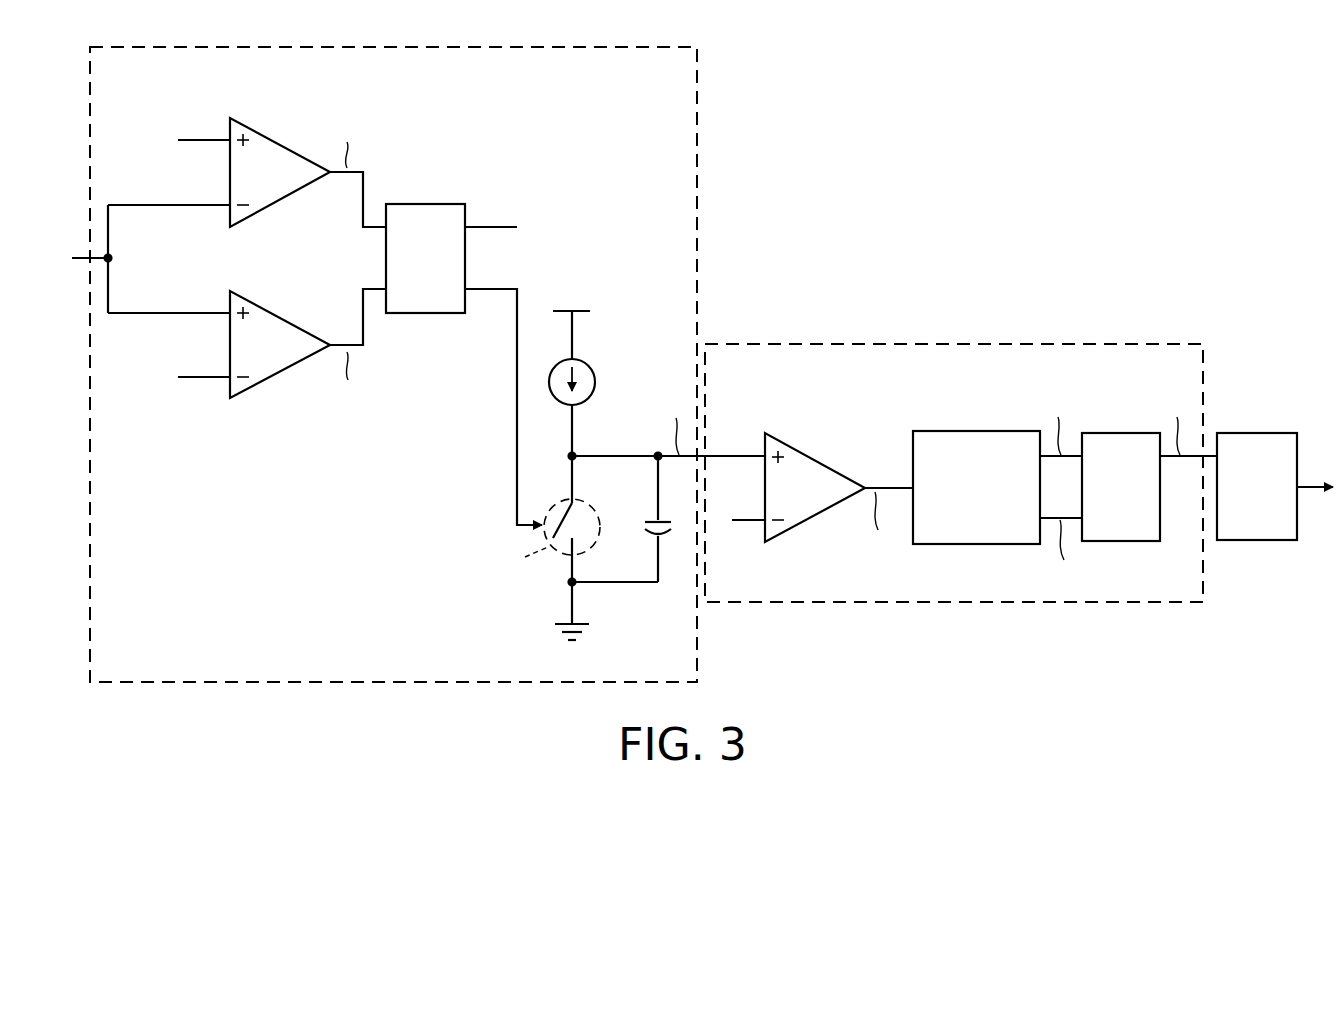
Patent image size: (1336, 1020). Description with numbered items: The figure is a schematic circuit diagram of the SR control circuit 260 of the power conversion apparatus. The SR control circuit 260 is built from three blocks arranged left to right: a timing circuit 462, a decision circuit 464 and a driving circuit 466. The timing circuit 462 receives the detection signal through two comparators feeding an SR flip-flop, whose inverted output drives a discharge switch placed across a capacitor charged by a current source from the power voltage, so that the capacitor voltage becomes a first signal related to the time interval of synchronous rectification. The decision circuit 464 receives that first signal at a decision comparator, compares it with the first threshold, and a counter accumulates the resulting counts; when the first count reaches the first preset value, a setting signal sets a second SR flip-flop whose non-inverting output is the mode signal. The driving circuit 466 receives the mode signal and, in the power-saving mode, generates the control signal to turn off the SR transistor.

The SR control circuit 260 is at (1302, 706).
The timing circuit 462 is at (592, 47).
The decision circuit 464 is at (1103, 343).
The driving circuit 466 is at (1258, 432).